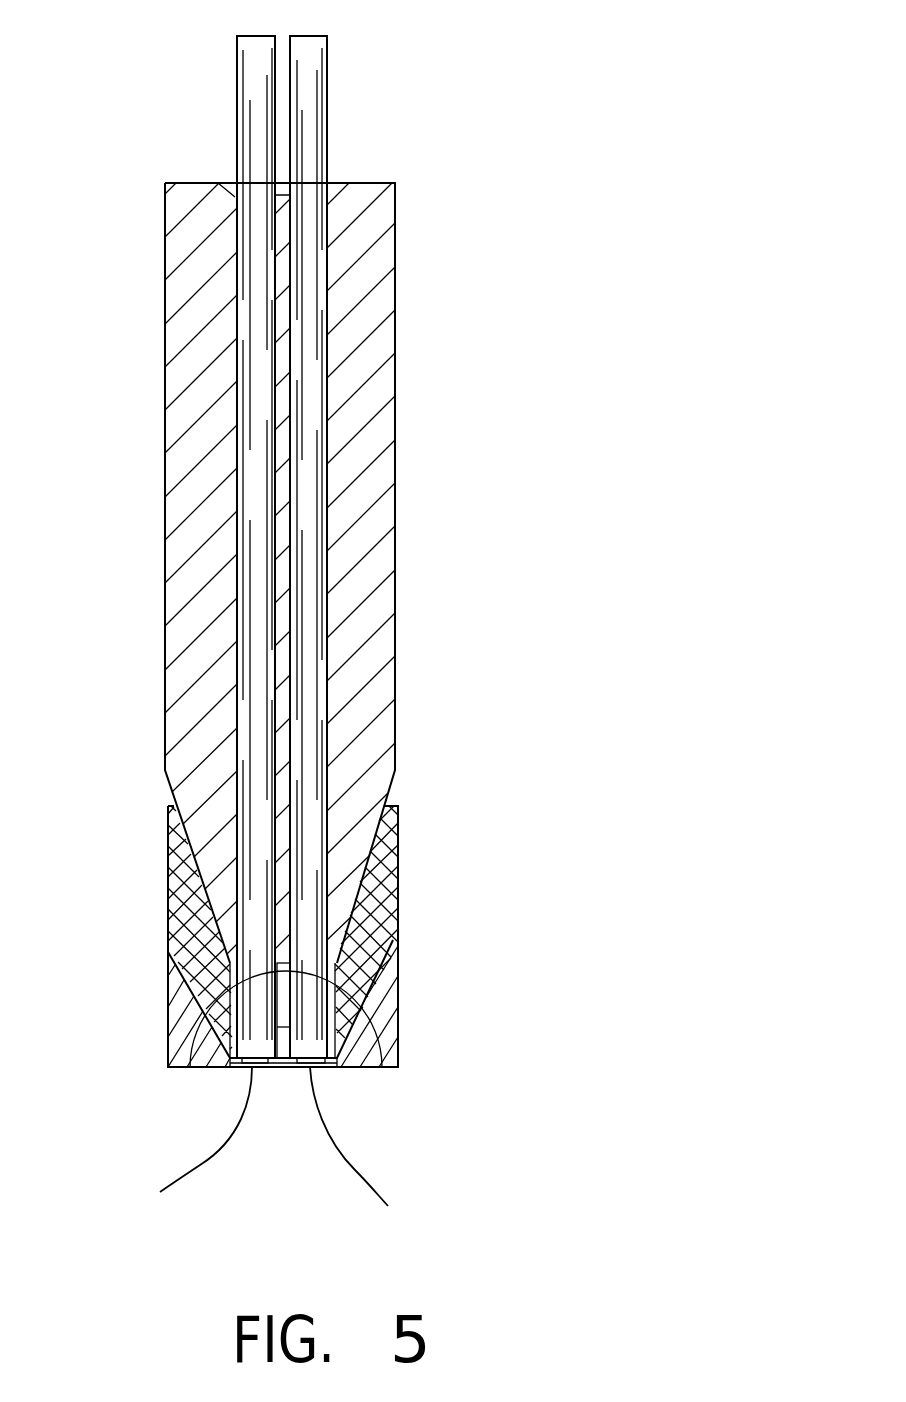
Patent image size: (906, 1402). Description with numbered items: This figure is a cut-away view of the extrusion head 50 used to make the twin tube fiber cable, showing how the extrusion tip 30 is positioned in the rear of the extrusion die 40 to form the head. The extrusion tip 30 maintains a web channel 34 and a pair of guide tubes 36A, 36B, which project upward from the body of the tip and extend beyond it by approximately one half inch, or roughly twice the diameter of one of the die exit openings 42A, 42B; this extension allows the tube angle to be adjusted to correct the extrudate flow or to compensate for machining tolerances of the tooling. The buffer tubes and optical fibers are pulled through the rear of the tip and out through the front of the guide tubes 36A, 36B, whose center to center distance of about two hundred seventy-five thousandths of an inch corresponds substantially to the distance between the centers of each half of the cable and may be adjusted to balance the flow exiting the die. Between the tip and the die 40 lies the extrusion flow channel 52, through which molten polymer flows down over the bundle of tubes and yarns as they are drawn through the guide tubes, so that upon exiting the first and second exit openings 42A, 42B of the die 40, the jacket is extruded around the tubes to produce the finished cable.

The extrusion tip 30 is at (372, 432).
The web channel 34 is at (288, 987).
The guide tube 36A is at (248, 84).
The guide tube 36B is at (307, 100).
The extrusion die 40 is at (390, 1037).
The exit opening 42A is at (166, 1141).
The exit opening 42B is at (388, 1150).
The extrusion head 50 is at (500, 511).
The extrusion flow channel 52 is at (390, 892).